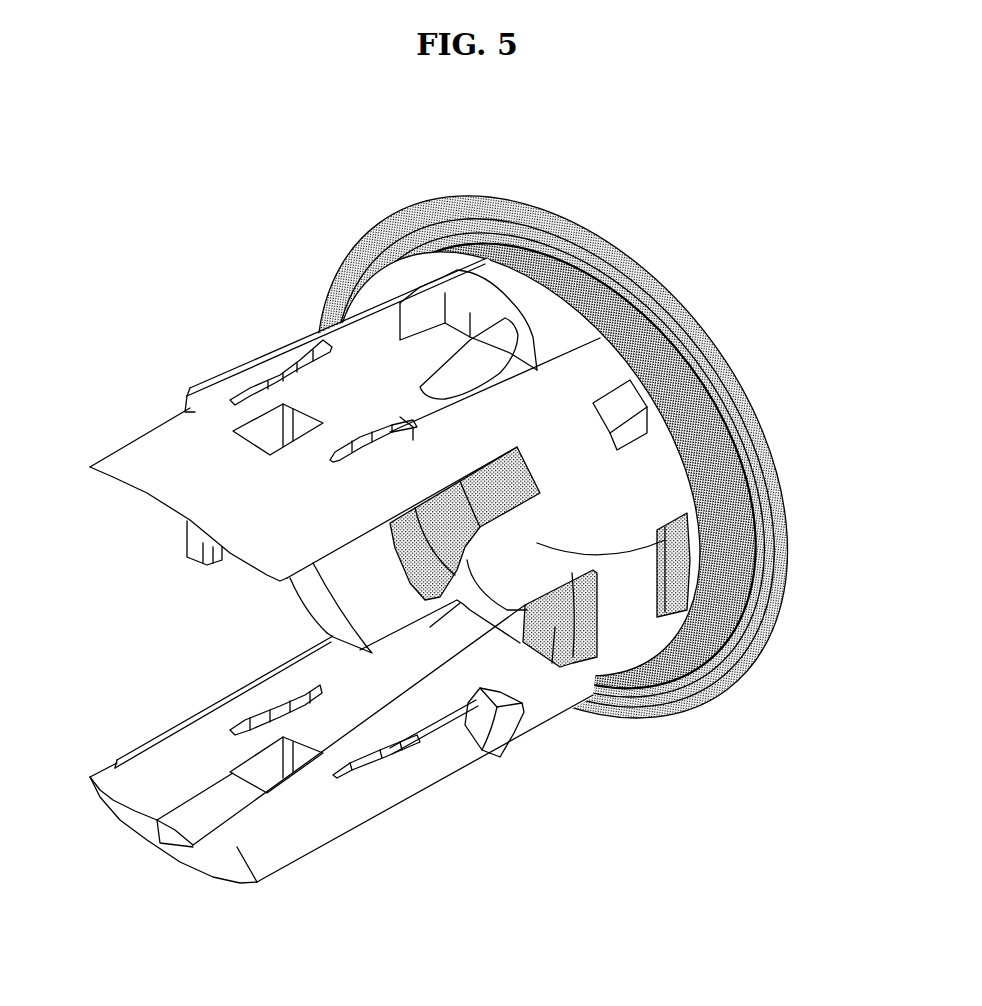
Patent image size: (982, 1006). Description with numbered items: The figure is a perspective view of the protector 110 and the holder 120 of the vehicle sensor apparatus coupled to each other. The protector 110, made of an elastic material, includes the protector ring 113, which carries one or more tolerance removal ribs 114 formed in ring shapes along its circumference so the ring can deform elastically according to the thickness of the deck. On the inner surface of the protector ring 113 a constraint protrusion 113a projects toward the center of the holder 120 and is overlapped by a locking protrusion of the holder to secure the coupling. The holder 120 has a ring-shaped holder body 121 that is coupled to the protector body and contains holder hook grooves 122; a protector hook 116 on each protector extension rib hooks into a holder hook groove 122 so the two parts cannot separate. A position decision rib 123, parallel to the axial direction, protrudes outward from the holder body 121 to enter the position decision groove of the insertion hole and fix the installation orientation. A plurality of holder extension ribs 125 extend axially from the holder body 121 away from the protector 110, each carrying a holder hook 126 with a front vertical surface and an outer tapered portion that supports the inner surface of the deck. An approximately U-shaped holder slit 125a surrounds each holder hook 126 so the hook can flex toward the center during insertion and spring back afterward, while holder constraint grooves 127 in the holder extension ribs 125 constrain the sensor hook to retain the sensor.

The protector 110 is at (618, 203).
The protector ring 113 is at (552, 457).
The constraint protrusion 113a is at (392, 258).
The tolerance removal rib 114 is at (687, 684).
The protector hook 116 is at (548, 642).
The holder 120 is at (466, 520).
The holder body 121 is at (665, 540).
The holder hook groove 122 is at (707, 647).
The position decision rib 123 is at (220, 380).
The holder extension rib 125 is at (167, 445).
The holder slit 125a is at (390, 437).
The holder hook 126 is at (465, 287).
The holder constraint groove 127 is at (262, 432).